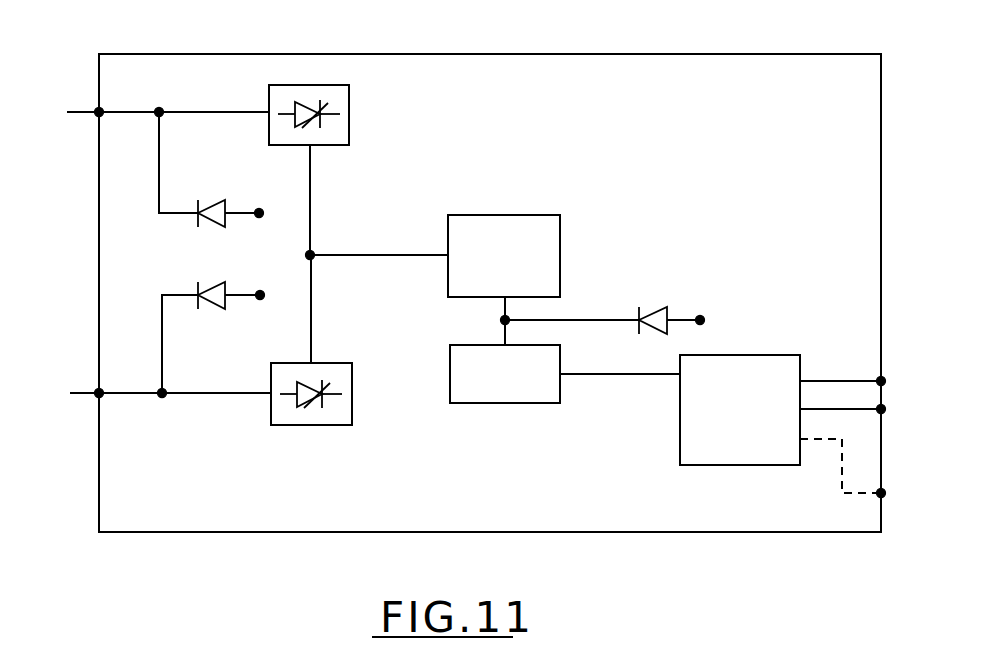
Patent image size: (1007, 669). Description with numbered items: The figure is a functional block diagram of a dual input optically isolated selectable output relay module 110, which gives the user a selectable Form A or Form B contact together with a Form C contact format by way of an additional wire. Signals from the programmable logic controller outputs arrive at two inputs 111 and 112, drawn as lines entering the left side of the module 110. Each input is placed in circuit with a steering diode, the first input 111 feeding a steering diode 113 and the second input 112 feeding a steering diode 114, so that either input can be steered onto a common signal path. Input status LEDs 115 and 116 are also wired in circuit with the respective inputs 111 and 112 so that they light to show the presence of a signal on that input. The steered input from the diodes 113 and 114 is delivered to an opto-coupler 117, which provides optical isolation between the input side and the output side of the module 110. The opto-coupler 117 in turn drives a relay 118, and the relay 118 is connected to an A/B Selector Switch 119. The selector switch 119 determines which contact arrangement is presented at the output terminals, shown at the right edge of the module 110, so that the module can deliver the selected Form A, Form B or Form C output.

The dual input optically isolated selectable output relay module 110 is at (798, 152).
The input 111 is at (99, 110).
The input 112 is at (99, 392).
The steering diode 113 is at (340, 103).
The steering diode 114 is at (332, 405).
The input status LED 115 is at (212, 203).
The input status LED 116 is at (218, 308).
The opto-coupler 117 is at (548, 215).
The relay 118 is at (545, 403).
The A/B Selector Switch 119 is at (713, 465).